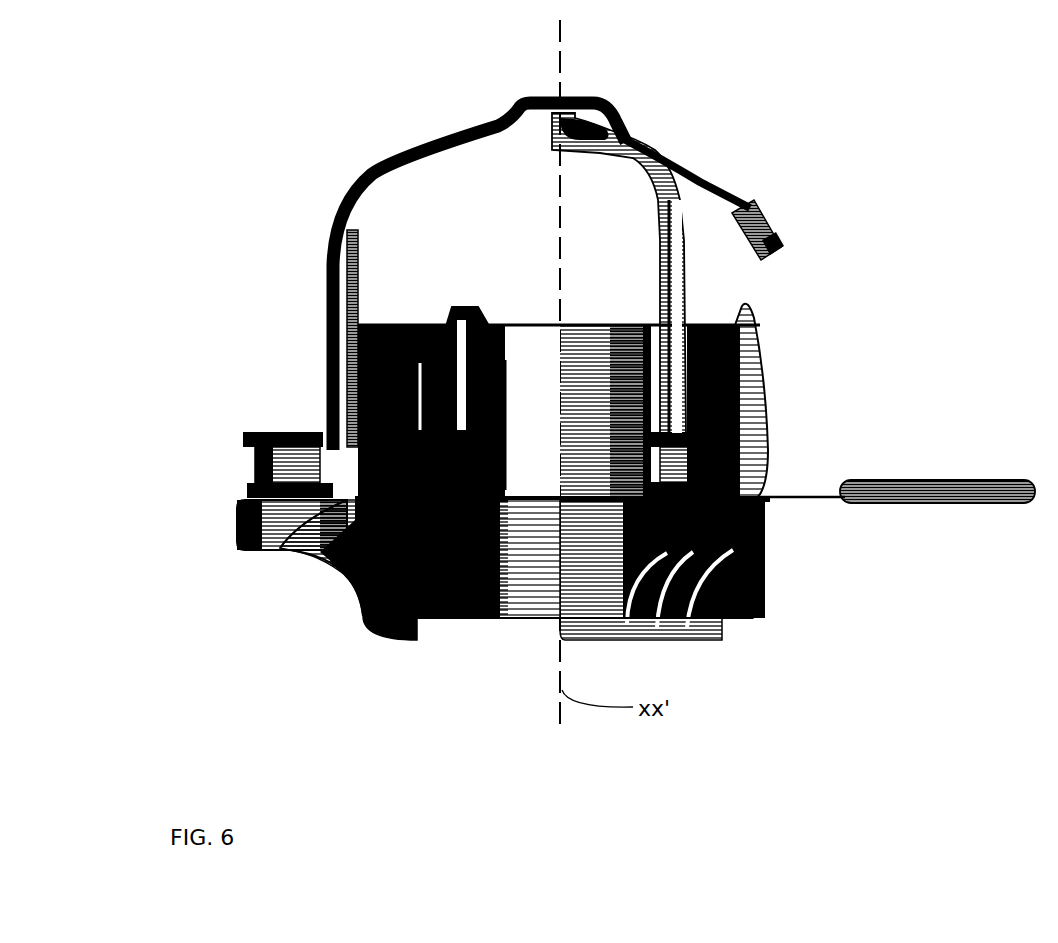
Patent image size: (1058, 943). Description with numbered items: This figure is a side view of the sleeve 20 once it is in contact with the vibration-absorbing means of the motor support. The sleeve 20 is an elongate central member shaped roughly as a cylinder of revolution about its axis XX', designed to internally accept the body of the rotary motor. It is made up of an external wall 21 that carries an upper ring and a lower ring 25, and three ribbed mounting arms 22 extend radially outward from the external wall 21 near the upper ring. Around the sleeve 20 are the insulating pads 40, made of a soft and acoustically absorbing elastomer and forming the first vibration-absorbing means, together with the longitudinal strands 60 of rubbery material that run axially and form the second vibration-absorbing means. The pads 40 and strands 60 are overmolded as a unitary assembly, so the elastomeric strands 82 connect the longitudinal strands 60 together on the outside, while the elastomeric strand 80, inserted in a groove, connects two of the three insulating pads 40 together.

The sleeve 20 is at (470, 648).
The external wall 21 is at (337, 603).
The mounting arms 22 is at (258, 560).
The lower ring 25 is at (529, 333).
The insulating pads 40 is at (258, 462).
The longitudinal strands 60 is at (358, 275).
The elastomeric strand 80 is at (930, 483).
The elastomeric strands 82 is at (392, 153).